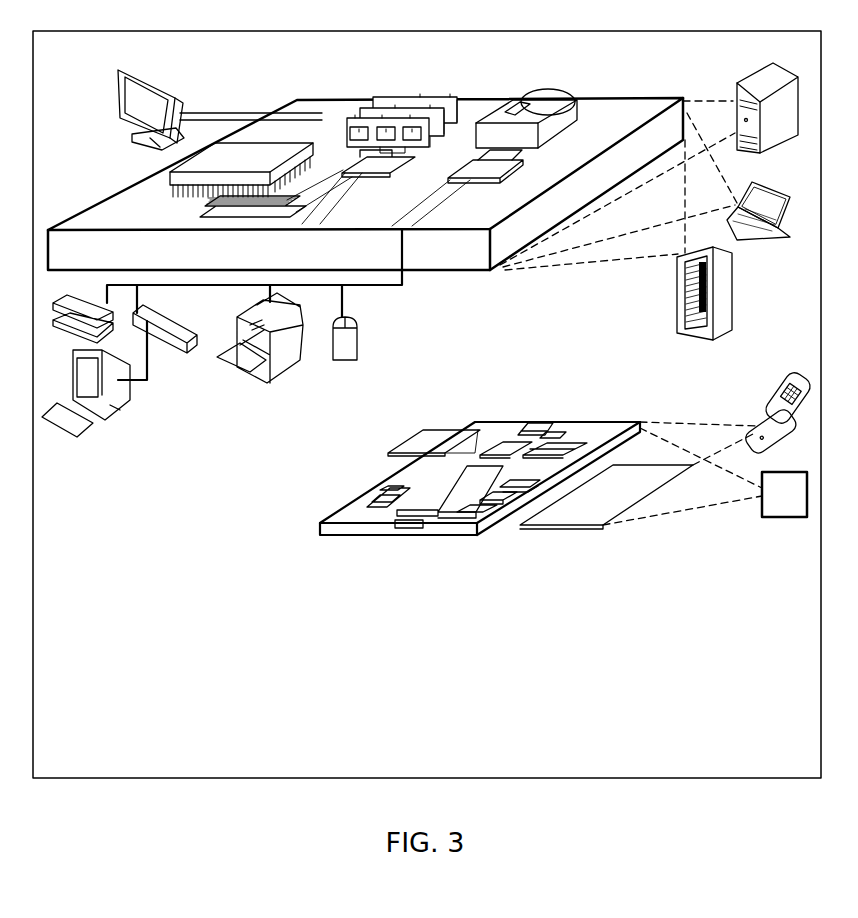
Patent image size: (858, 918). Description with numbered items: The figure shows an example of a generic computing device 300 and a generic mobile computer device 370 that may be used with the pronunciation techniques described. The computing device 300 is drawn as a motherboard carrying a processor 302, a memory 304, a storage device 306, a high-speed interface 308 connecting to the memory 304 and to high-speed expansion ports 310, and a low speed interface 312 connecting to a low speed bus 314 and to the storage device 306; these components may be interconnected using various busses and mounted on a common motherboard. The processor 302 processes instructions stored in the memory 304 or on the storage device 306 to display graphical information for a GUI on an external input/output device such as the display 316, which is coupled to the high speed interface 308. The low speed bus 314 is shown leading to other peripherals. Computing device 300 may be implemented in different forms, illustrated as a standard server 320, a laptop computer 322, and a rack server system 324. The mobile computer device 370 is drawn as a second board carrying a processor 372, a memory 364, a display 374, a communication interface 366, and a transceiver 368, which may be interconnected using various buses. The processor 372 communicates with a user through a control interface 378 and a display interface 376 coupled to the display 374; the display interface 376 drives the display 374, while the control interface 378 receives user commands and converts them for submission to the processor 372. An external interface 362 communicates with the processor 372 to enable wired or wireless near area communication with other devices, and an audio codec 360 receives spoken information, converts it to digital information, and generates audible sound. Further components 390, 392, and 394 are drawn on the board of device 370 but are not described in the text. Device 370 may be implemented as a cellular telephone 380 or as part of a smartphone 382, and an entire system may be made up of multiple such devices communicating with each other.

The computing device 300 is at (250, 82).
The processor 302 is at (170, 178).
The memory 304 is at (382, 98).
The storage device 306 is at (530, 88).
The high-speed interface 308 is at (345, 160).
The high-speed expansion ports 310 is at (258, 216).
The low speed interface 312 is at (487, 167).
The low speed bus 314 is at (408, 232).
The display 316 is at (119, 70).
The standard server 320 is at (738, 88).
The laptop computer 322 is at (746, 182).
The rack server system 324 is at (675, 308).
The audio codec 360 is at (518, 507).
The external interface 362 is at (410, 535).
The memory 364 is at (372, 493).
The communication interface 366 is at (507, 440).
The transceiver 368 is at (558, 445).
The mobile computer device 370 is at (462, 405).
The processor 372 is at (426, 527).
The display 374 is at (613, 527).
The display interface 376 is at (480, 532).
The control interface 378 is at (510, 513).
The cellular telephone 380 is at (780, 383).
The smartphone 382 is at (766, 470).
The component 390 is at (540, 423).
The component 392 is at (460, 428).
The sheet component 394 is at (412, 426).